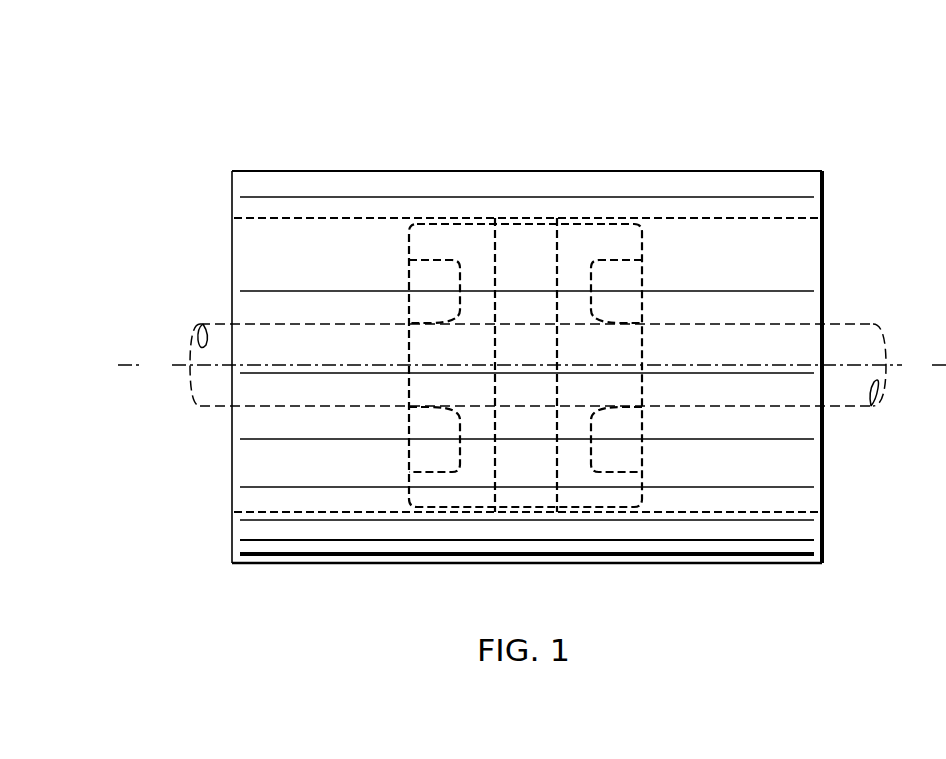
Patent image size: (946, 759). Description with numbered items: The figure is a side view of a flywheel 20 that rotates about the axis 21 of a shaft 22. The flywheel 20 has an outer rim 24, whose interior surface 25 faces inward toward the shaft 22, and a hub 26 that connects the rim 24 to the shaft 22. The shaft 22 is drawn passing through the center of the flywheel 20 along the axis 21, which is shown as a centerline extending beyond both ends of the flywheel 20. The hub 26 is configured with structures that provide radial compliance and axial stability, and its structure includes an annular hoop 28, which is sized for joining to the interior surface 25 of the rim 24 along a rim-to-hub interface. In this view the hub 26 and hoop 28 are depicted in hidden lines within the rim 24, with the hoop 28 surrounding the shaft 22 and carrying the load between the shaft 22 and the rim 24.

The flywheel 20 is at (774, 168).
The axis 21 is at (532, 366).
The shaft 22 is at (843, 326).
The rim 24 is at (592, 182).
The interior surface 25 is at (801, 513).
The hub 26 is at (643, 237).
The annular hoop 28 is at (490, 227).